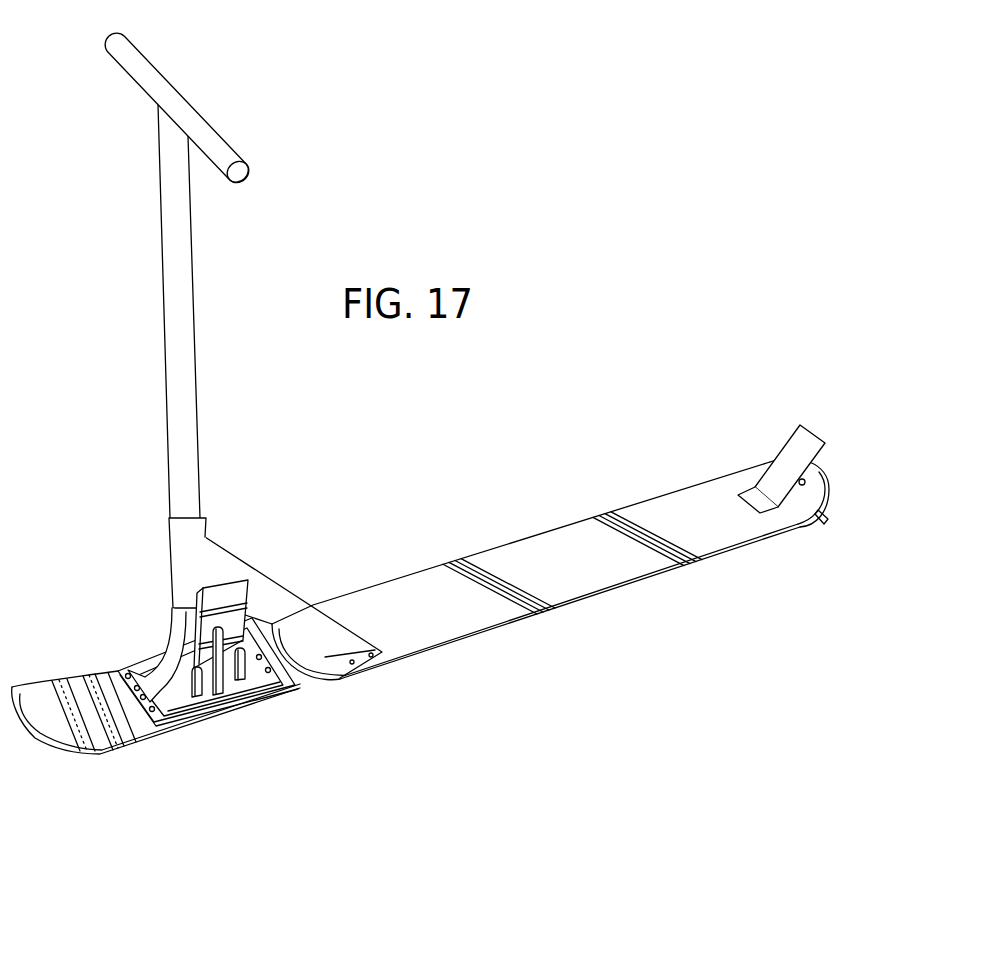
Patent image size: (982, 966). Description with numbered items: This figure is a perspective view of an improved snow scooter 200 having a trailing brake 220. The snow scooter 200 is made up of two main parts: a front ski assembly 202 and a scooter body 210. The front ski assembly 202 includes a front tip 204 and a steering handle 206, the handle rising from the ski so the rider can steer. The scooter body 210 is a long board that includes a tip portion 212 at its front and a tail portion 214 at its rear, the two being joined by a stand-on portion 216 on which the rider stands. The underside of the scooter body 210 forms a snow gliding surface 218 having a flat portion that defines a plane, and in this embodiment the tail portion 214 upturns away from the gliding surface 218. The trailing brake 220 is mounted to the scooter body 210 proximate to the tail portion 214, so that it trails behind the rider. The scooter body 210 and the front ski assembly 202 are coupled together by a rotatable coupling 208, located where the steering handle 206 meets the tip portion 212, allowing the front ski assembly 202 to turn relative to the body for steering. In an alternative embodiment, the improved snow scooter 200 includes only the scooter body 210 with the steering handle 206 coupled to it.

The improved snow scooter 200 is at (605, 360).
The front ski assembly 202 is at (150, 345).
The front tip 204 is at (101, 669).
The steering handle 206 is at (194, 289).
The rotatable coupling 208 is at (171, 583).
The scooter body 210 is at (545, 437).
The tip portion 212 is at (320, 684).
The tail portion 214 is at (831, 495).
The stand-on portion 216 is at (537, 556).
The snow gliding surface 218 is at (557, 609).
The trailing brake 220 is at (778, 442).